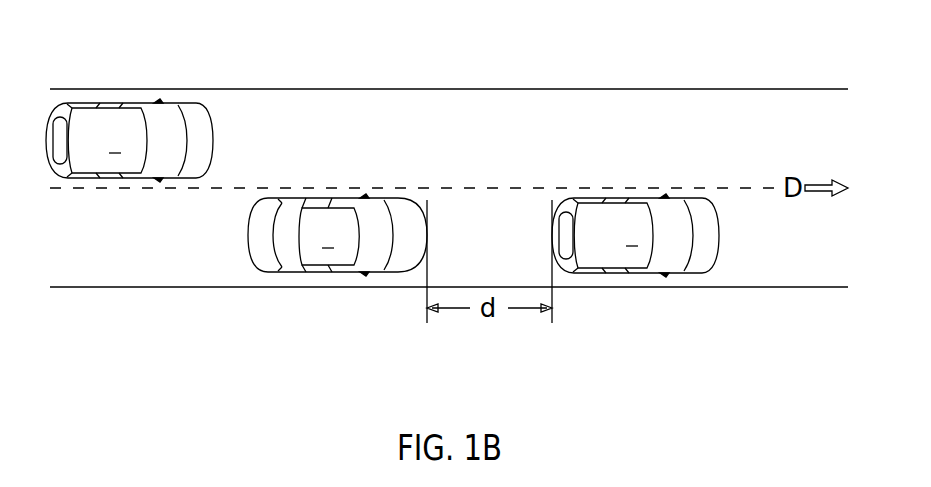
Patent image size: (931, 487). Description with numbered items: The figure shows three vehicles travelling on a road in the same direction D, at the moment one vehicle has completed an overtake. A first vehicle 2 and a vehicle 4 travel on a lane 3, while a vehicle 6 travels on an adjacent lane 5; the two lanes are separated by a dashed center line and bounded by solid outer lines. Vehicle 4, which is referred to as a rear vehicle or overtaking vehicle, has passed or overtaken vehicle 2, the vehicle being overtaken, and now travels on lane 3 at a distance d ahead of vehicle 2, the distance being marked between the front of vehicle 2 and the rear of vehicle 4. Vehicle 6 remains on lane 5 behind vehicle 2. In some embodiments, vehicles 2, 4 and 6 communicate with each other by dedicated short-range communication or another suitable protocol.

The vehicle 2 is at (337, 235).
The lane 3 is at (803, 272).
The vehicle 4 is at (635, 235).
The lane 5 is at (803, 103).
The vehicle 6 is at (129, 140).